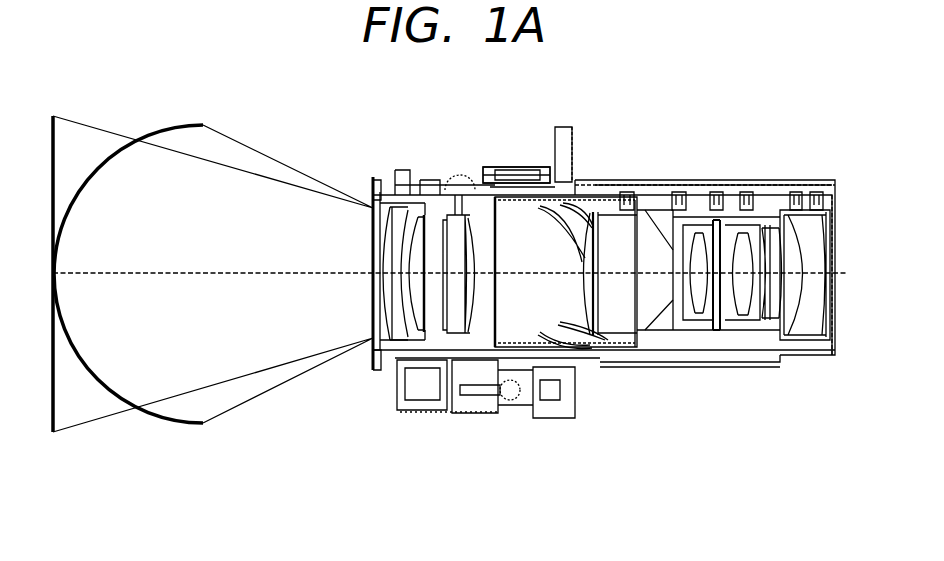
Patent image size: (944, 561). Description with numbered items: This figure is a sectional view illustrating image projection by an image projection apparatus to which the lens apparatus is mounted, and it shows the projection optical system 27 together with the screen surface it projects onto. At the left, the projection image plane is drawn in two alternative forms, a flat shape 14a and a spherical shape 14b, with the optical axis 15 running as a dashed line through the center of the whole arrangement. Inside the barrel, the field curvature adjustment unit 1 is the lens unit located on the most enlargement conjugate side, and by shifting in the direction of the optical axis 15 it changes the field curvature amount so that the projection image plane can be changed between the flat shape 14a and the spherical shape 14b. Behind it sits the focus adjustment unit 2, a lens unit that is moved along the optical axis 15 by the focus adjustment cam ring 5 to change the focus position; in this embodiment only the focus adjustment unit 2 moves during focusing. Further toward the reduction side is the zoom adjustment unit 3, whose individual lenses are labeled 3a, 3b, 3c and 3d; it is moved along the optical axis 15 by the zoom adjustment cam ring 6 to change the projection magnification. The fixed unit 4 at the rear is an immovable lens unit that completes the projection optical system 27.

The field curvature adjustment unit 1 is at (415, 334).
The focus adjustment unit 2 is at (467, 185).
The zoom adjustment unit 3 is at (593, 113).
The lens of third lens group 3a is at (628, 192).
The lens of third lens group 3b is at (682, 192).
The lens of third lens group 3c is at (713, 192).
The lens of third lens group 3d is at (742, 192).
The fixed unit 4 is at (805, 187).
The focus adjustment cam ring 5 is at (485, 331).
The zoom adjustment cam ring 6 is at (652, 344).
The flat shape 14a is at (55, 390).
The spherical shape 14b is at (158, 418).
The optical axis 15 is at (213, 275).
The projection optical system 27 is at (519, 143).